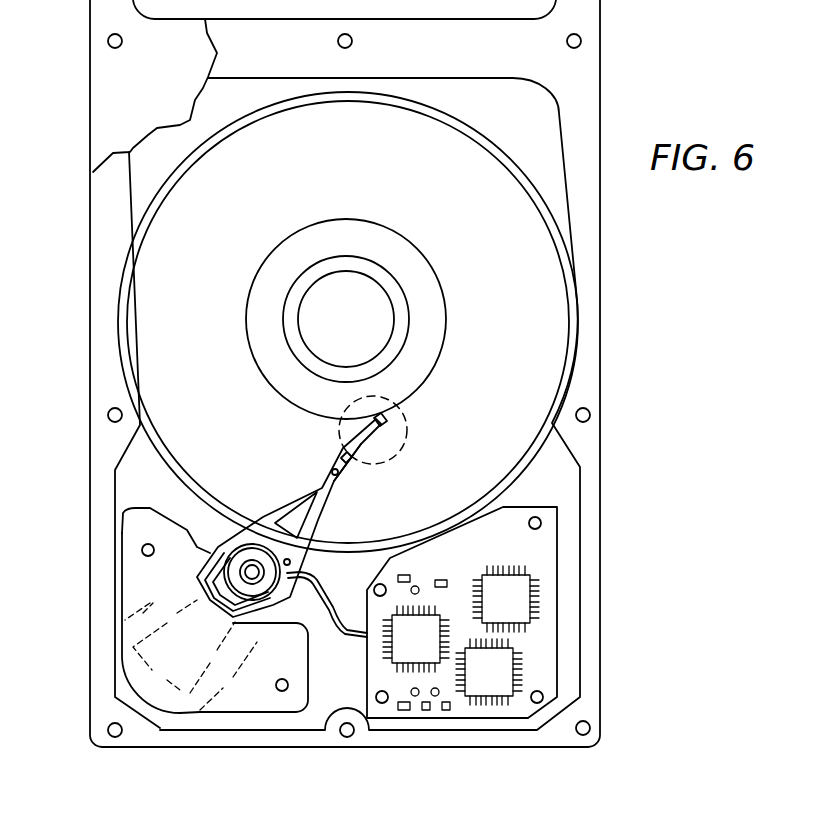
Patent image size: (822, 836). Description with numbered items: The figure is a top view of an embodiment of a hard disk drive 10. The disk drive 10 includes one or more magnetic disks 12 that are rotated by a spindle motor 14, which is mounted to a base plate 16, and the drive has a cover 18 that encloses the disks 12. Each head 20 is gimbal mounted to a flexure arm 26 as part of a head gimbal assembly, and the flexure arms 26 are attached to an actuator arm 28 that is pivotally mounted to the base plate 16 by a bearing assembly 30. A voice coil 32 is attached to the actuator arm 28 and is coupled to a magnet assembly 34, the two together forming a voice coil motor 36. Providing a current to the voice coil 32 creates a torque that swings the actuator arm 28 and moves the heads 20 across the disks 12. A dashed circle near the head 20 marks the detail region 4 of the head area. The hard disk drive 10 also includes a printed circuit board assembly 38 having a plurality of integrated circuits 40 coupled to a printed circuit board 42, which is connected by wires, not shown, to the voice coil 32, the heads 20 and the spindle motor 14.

The detail region of FIG. 4 (head area) 4 is at (405, 427).
The hard disk drive 10 is at (588, 302).
The magnetic disks 12 is at (348, 322).
The spindle motor 14 is at (348, 317).
The base plate 16 is at (543, 157).
The cover 18 is at (103, 88).
The head 20 is at (383, 427).
The flexure arm 26 is at (357, 448).
The actuator arm 28 is at (257, 530).
The bearing assembly 30 is at (238, 582).
The voice coil 32 is at (102, 643).
The magnet assembly 34 is at (258, 702).
The voice coil motor 36 is at (190, 700).
The printed circuit board assembly 38 is at (537, 638).
The integrated circuits 40 is at (482, 677).
The printed circuit board 42 is at (542, 552).